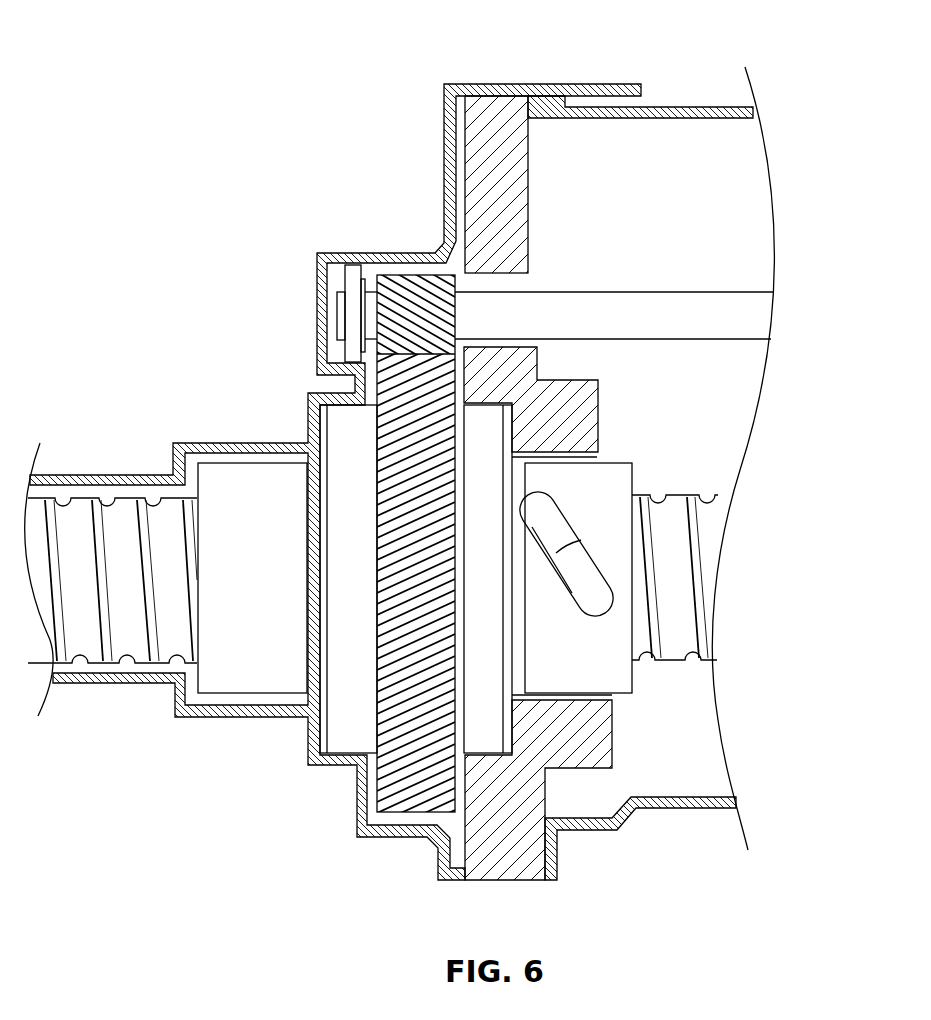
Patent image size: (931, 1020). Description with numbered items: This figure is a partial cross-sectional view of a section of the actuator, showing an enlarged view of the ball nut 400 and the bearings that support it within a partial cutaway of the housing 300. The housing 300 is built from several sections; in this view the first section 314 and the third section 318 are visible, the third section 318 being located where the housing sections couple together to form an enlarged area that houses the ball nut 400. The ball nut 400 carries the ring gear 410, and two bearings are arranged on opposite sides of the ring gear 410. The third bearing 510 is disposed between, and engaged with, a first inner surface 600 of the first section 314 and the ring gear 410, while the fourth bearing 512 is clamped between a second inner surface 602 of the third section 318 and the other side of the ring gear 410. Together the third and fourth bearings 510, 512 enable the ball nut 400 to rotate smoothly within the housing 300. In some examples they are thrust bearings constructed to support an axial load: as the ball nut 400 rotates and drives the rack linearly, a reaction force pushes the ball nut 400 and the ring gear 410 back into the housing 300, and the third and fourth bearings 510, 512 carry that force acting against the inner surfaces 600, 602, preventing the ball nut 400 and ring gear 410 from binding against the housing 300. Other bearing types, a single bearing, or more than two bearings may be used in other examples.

The housing 300 is at (443, 186).
The first section 314 is at (108, 475).
The third section 318 is at (497, 120).
The ball nut 400 is at (243, 485).
The ring gear 410 is at (417, 780).
The third bearing 510 is at (352, 472).
The fourth bearing 512 is at (490, 497).
The first inner surface 600 is at (336, 406).
The second inner surface 602 is at (503, 418).